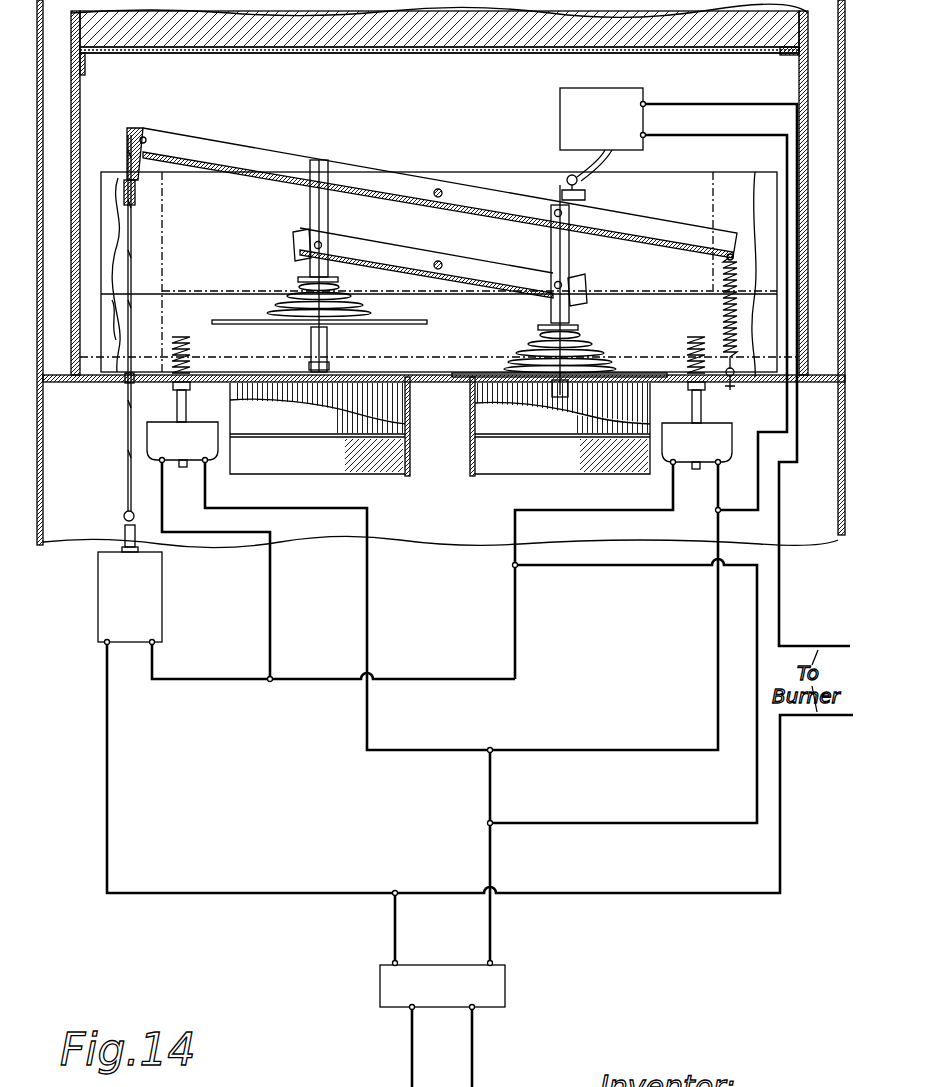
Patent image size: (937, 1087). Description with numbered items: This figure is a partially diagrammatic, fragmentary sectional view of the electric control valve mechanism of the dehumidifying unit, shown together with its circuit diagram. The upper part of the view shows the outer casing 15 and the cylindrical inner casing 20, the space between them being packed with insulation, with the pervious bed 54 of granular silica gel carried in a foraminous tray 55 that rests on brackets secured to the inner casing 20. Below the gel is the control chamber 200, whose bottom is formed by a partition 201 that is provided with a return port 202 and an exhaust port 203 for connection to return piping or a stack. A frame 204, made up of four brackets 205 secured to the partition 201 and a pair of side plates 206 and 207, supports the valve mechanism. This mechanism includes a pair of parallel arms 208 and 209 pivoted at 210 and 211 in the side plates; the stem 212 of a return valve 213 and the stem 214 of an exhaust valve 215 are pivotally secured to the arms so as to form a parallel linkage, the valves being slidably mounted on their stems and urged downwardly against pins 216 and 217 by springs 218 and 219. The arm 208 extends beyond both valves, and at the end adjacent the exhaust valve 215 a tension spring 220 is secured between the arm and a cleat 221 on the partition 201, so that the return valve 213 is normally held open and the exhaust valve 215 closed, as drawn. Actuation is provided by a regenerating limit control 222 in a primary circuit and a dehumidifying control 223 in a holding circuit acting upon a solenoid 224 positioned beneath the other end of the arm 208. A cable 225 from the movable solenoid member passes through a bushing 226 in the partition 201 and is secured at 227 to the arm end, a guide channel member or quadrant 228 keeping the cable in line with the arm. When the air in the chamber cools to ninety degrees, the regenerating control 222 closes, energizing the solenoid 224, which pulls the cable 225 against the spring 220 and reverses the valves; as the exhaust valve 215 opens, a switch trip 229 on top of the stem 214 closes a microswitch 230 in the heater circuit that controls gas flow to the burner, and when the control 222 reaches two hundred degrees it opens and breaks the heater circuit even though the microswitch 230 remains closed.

The outer casing 15 is at (45, 475).
The inner casing 20 is at (80, 97).
The pervious bed 54 is at (457, 35).
The foraminous tray 55 is at (300, 50).
The control chamber 200 is at (440, 108).
The partition 201 is at (447, 381).
The return port 202 is at (387, 470).
The exhaust port 203 is at (511, 466).
The frame 204 is at (725, 177).
The brackets 205 is at (112, 315).
The side plate 206 is at (113, 240).
The side plate 207 is at (470, 178).
The arm 208 is at (262, 162).
The arm 209 is at (357, 258).
The pivot 210 is at (436, 190).
The pivot 211 is at (441, 263).
The stem 212 is at (310, 208).
The return valve 213 is at (398, 320).
The stem 214 is at (573, 268).
The exhaust valve 215 is at (627, 372).
The pin 216 is at (332, 330).
The pin 217 is at (571, 384).
The spring 218 is at (292, 305).
The spring 219 is at (548, 348).
The tension spring 220 is at (726, 305).
The cleat 221 is at (733, 380).
The regenerating limit control 222 is at (668, 455).
The dehumidifying control 223 is at (210, 462).
The solenoid 224 is at (108, 596).
The cable 225 is at (131, 265).
The bushing 226 is at (128, 382).
The cable attachment 227 is at (134, 136).
The guide channel member 228 is at (137, 193).
The switch trip 229 is at (590, 196).
The microswitch 230 is at (645, 95).